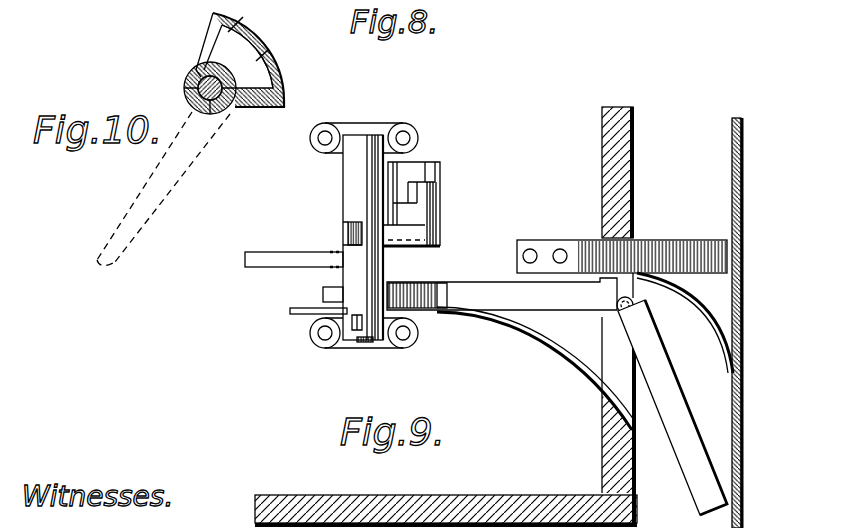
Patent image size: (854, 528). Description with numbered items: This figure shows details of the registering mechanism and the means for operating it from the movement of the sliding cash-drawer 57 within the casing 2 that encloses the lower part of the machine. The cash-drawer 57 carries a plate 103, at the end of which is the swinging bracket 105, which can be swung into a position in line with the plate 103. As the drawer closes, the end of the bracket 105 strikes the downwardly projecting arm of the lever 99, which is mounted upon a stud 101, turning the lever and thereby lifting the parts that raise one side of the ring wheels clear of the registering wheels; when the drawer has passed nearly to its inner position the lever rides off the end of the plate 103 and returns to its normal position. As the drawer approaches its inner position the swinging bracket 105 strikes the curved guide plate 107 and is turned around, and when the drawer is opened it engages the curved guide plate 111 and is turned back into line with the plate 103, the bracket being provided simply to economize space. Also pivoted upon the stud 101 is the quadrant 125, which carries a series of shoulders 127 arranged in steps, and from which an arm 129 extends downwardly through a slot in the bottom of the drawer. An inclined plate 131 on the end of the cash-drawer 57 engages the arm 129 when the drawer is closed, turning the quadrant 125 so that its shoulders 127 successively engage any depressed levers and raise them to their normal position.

In FIG. 9, the casing 2 is at (757, 195).
In FIG. 9, the cash-drawer 57 is at (470, 495).
In FIG. 9, the lever 99 is at (323, 292).
In FIG. 10, the stud 101 is at (200, 78).
In FIG. 9, the stud 101 is at (365, 343).
In FIG. 9, the plate 103 is at (502, 294).
In FIG. 9, the swinging bracket 105 is at (687, 370).
In FIG. 9, the curved guide plate 107 is at (688, 313).
In FIG. 9, the curved guide plate 111 is at (537, 330).
In FIG. 10, the quadrant 125 is at (280, 60).
In FIG. 9, the quadrant 125 is at (427, 212).
In FIG. 10, the shoulders 127 is at (245, 17).
In FIG. 9, the shoulders 127 is at (412, 190).
In FIG. 10, the arm 129 is at (133, 213).
In FIG. 9, the arm 129 is at (268, 262).
In FIG. 9, the inclined plate 131 is at (647, 240).